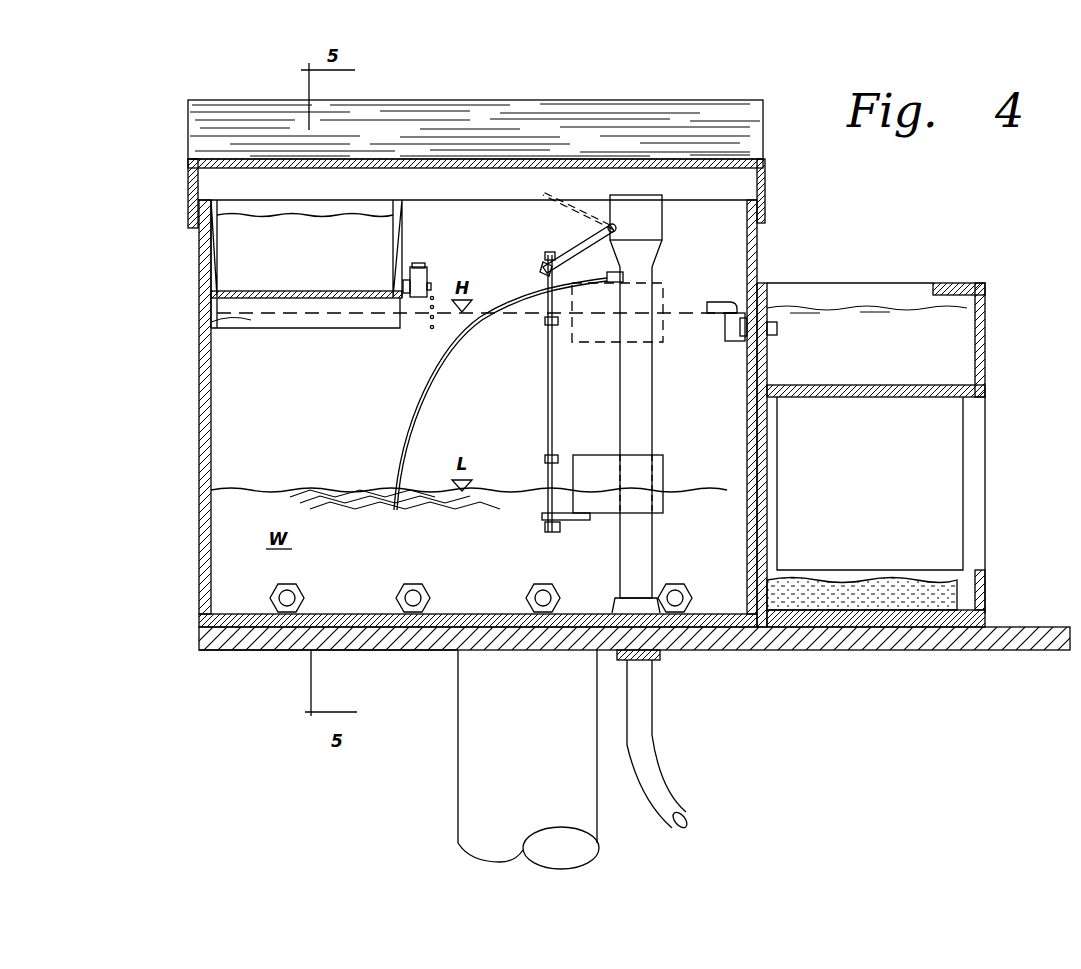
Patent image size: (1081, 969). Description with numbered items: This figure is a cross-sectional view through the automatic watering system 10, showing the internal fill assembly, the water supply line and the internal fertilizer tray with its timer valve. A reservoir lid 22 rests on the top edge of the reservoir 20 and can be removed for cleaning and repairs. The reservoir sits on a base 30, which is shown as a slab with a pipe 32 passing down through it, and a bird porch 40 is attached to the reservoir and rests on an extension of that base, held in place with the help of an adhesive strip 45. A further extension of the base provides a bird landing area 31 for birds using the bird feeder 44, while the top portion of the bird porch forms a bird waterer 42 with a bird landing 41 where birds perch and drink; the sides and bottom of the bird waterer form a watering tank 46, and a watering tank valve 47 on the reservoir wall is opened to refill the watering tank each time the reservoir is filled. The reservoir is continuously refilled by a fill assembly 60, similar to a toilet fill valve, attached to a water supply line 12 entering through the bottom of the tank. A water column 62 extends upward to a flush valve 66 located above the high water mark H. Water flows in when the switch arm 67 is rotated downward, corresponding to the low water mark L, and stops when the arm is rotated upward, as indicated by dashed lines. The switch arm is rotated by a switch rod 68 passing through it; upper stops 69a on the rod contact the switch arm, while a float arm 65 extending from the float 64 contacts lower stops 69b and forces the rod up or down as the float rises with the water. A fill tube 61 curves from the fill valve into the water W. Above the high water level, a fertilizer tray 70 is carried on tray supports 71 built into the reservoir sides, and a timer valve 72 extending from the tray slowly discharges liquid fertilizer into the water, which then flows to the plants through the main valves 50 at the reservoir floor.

The water treatment apparatus 10 is at (790, 216).
The water supply line 12 is at (645, 705).
The reservoir 20 is at (200, 405).
The reservoir lid 22 is at (673, 108).
The base 30 is at (375, 648).
The bird landing area 31 is at (1012, 620).
The drain pipe 32 is at (475, 742).
The bird porch 40 is at (904, 414).
The bird landing 41 is at (958, 280).
The bird waterer 42 is at (880, 318).
The bird feeder 44 is at (862, 585).
The adhesive strip 45 is at (757, 447).
The watering tank 46 is at (980, 345).
The watering tank valve 47 is at (720, 305).
The main valves 50 is at (413, 598).
The fill assembly 60 is at (533, 411).
The fill tube 61 is at (417, 393).
The water column 62 is at (643, 540).
The float 64 is at (632, 466).
The float arm 65 is at (573, 523).
The flush valve 66 is at (650, 230).
The switch arm 67 is at (567, 258).
The switch rod 68 is at (548, 388).
The upper stops 69a is at (548, 318).
The lower stops 69b is at (548, 532).
The fertilizer tray 70 is at (415, 222).
The tray supports 71 is at (235, 310).
The timer valve 72 is at (417, 265).